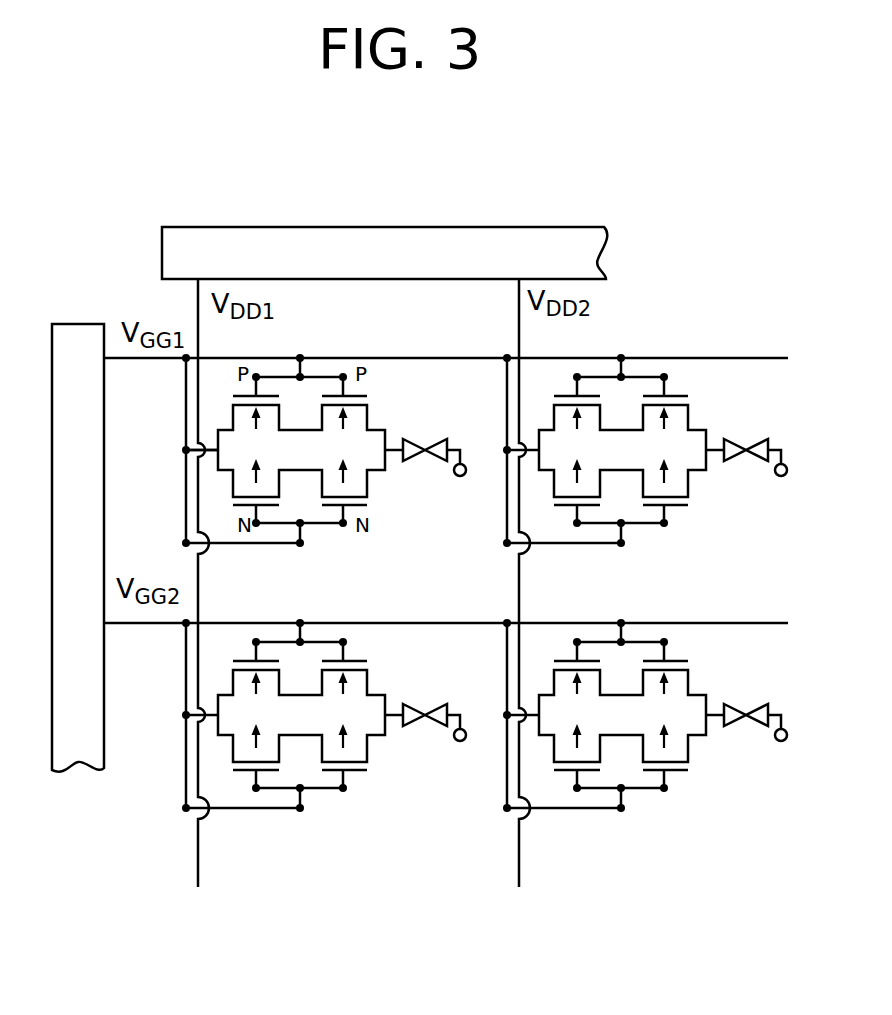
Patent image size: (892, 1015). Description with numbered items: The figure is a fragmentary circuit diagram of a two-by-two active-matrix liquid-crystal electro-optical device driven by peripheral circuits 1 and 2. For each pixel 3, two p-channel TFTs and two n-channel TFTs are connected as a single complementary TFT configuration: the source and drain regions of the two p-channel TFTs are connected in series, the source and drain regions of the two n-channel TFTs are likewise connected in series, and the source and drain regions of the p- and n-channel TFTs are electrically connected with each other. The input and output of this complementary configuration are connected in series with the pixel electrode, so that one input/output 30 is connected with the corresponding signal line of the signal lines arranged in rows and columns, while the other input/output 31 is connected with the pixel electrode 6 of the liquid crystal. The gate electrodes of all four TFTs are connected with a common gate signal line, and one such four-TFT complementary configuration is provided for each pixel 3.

The peripheral circuit 1 is at (396, 238).
The peripheral circuit 2 is at (82, 350).
The pixel 3 is at (427, 463).
The pixel electrode 6 is at (396, 454).
The input/output 30 is at (202, 452).
The input/output 31 is at (388, 448).